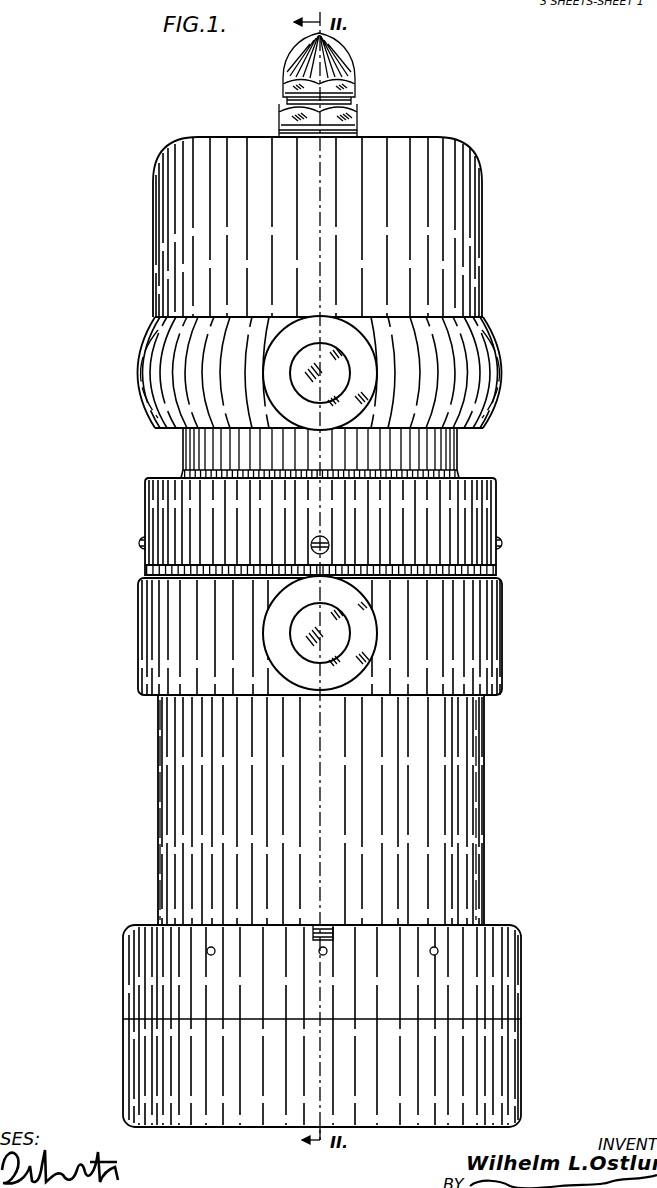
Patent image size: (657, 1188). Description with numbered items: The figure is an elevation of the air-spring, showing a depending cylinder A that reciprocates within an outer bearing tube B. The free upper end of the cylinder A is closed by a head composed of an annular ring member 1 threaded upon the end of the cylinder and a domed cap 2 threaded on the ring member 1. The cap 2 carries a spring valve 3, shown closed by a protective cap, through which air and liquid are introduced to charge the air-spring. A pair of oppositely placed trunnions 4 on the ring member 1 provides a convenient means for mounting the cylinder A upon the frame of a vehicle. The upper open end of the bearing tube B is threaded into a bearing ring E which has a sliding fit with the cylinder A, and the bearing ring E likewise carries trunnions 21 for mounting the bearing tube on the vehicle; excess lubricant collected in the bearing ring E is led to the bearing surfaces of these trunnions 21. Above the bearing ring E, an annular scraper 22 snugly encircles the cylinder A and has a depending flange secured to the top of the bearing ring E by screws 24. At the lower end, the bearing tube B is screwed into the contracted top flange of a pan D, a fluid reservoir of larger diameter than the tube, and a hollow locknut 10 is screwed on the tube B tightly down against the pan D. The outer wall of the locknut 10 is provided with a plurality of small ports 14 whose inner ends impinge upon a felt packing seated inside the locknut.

The ring member 1 is at (499, 352).
The domed cap 2 is at (483, 202).
The spring valve 3 is at (358, 110).
The trunnions 4 is at (290, 364).
The cylinder A is at (459, 457).
The annular scraper 22 is at (497, 480).
The screws 24 is at (505, 535).
The bearing ring E is at (508, 605).
The trunnions 21 is at (290, 633).
The bearing tube B is at (488, 783).
The hollow locknut 10 is at (532, 977).
The ports 14 is at (438, 949).
The pan D is at (522, 1045).